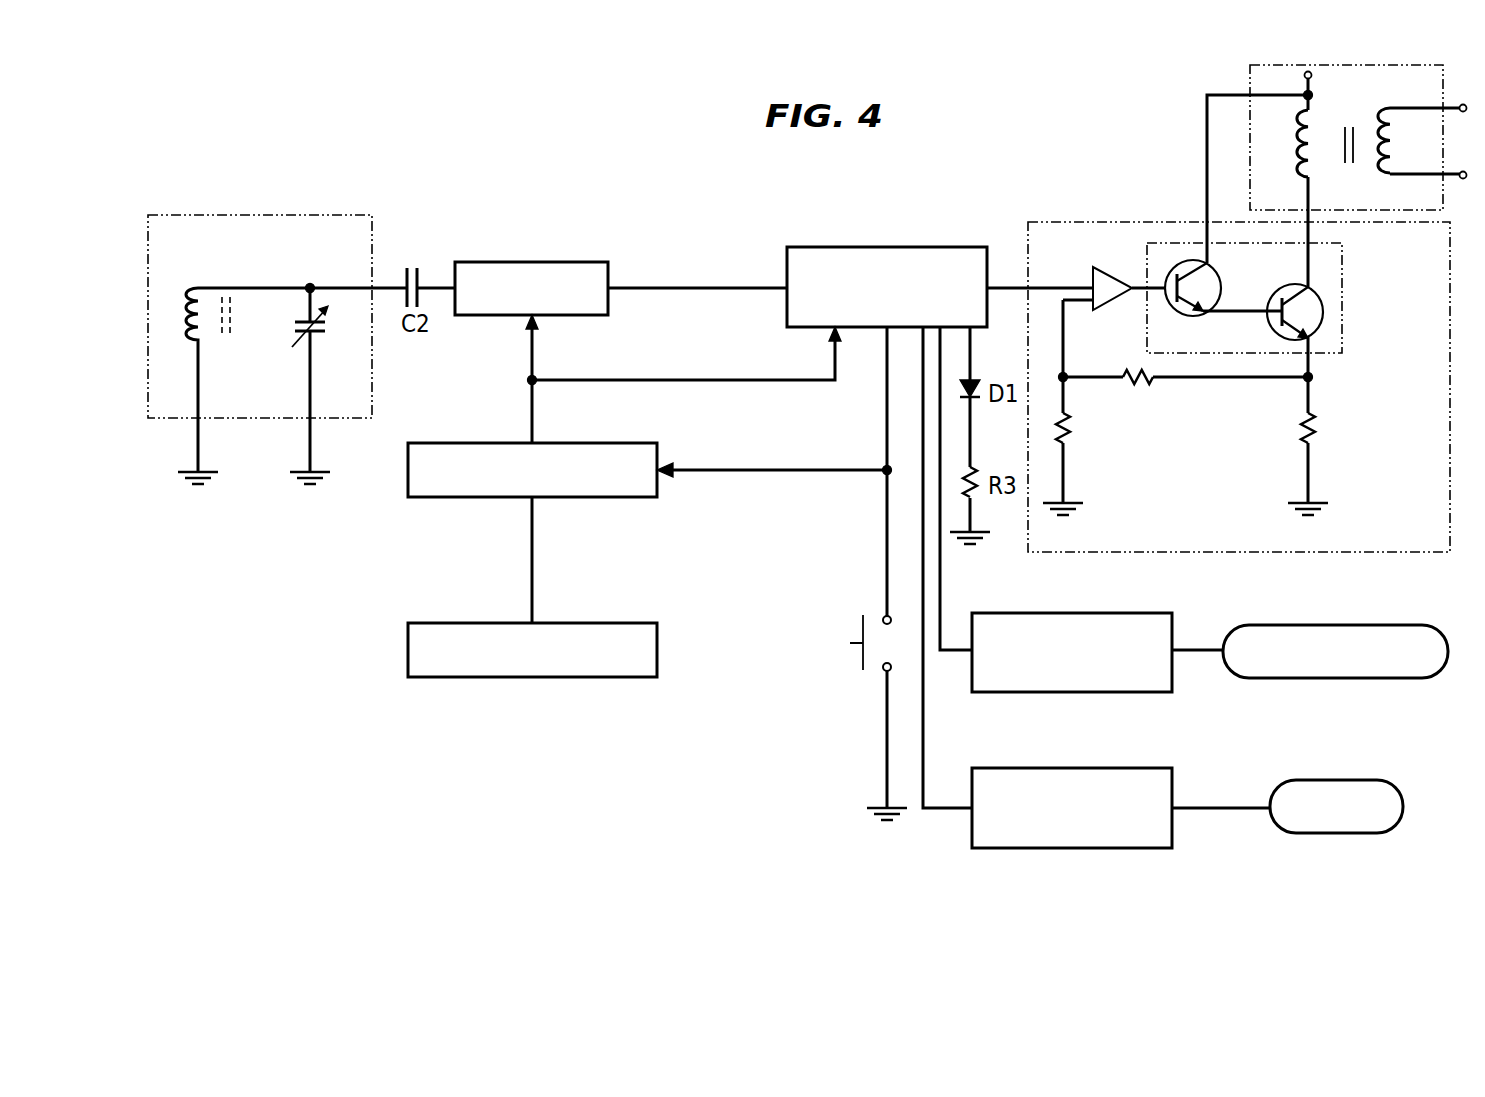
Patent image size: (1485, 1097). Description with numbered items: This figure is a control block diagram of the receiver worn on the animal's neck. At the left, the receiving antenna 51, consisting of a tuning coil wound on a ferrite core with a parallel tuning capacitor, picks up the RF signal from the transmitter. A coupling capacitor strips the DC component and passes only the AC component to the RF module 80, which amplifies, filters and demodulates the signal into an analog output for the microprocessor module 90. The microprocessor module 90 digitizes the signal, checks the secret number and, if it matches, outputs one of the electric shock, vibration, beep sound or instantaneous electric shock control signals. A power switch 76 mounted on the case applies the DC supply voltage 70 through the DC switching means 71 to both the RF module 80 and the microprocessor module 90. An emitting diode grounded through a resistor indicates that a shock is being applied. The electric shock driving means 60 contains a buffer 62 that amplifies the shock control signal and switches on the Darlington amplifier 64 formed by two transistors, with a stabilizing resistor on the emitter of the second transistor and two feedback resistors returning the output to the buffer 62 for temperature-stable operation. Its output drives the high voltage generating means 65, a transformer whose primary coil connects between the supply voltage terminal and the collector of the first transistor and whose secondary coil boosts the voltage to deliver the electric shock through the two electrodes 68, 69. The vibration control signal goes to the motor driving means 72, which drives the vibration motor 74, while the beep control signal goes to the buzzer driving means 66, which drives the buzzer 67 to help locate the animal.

The receiving antenna 51 is at (182, 215).
The RF module 80 is at (586, 261).
The microprocessor module 90 is at (950, 247).
The DC switching means 71 is at (635, 442).
The DC supply voltage 70 is at (630, 624).
The power switch 76 is at (848, 645).
The motor driving means 72 is at (1150, 692).
The vibration motor 74 is at (1425, 678).
The buzzer driving means 66 is at (1140, 848).
The buzzer 67 is at (1380, 833).
The electric shock driving means 60 is at (1048, 223).
The buffer 62 is at (1112, 265).
The Darlington amplifier 64 is at (1342, 328).
The high voltage generating means 65 is at (1250, 90).
The electrode 68 is at (1462, 104).
The electrode 69 is at (1464, 181).